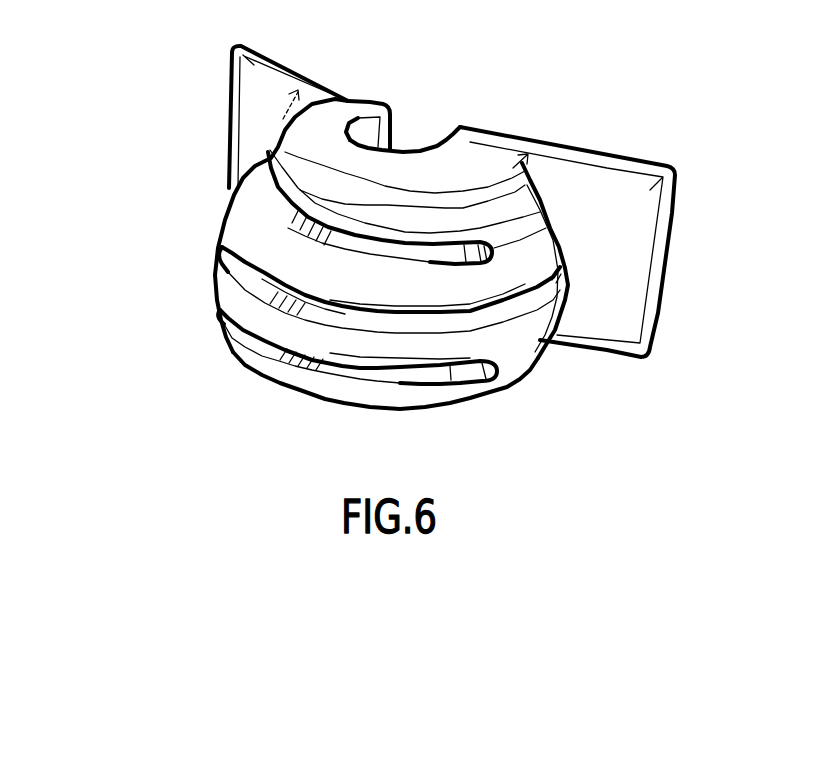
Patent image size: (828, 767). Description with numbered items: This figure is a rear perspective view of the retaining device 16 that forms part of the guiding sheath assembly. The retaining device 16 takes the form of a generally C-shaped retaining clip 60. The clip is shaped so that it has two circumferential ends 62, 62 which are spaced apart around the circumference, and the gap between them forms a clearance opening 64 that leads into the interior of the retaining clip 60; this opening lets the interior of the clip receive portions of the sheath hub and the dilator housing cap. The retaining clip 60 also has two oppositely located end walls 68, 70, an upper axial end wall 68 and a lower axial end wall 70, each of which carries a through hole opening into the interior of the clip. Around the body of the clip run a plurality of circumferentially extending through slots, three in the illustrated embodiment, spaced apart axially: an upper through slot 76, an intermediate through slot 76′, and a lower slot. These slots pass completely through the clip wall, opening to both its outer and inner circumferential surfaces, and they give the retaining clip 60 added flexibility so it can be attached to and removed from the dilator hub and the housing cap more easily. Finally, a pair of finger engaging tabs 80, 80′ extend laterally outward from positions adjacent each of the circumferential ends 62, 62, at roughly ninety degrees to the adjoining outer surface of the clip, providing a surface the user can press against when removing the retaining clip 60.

The retaining device 16 is at (543, 413).
The retaining clip 60 is at (220, 195).
The circumferential end 62 is at (393, 110).
The clearance opening 64 is at (413, 137).
The end wall 68 is at (467, 167).
The end wall 70 is at (301, 388).
The upper through slot 76 is at (470, 253).
The intermediate through slot 76′ is at (540, 287).
The finger engaging tab 80 is at (672, 164).
The finger engaging tab 80′ is at (259, 44).